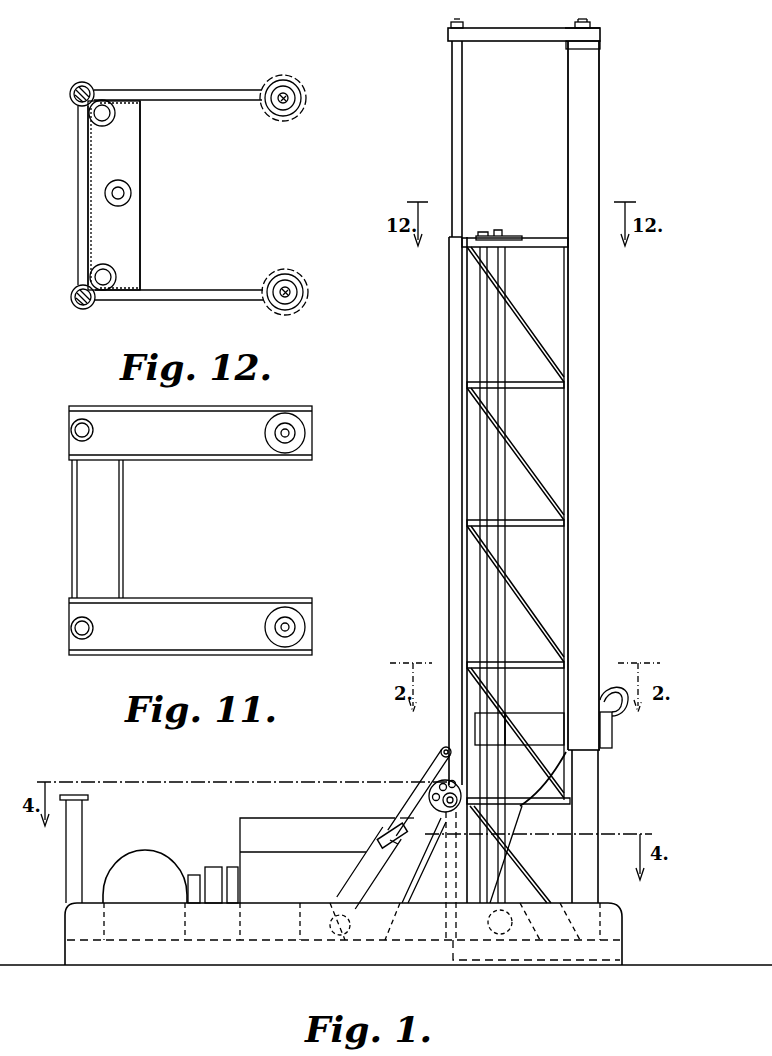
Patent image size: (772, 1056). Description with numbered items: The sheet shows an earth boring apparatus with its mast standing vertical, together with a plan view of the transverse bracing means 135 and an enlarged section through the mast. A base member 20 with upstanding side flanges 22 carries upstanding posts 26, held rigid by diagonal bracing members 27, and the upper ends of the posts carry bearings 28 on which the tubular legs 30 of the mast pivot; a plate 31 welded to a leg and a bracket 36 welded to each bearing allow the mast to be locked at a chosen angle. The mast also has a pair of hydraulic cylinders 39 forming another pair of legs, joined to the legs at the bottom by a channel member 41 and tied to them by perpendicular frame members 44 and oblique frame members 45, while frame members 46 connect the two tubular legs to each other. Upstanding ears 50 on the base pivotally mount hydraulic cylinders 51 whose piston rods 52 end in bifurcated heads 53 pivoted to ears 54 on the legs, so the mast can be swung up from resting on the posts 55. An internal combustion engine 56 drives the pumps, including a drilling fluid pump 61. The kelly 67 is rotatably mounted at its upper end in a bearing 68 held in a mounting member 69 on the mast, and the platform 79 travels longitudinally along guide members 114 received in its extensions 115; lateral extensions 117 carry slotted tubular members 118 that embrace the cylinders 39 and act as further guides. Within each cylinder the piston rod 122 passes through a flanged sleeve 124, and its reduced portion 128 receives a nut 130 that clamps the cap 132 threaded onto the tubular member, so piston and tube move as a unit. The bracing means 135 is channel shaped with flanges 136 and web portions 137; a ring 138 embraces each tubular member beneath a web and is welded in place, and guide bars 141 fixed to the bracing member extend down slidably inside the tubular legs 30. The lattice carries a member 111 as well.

In FIG. 1, the base member 20 is at (220, 958).
In FIG. 1, the upstanding side flanges 22 is at (182, 952).
In FIG. 1, the upstanding posts 26 is at (448, 841).
In FIG. 1, the diagonal bracing members 27 is at (418, 886).
In FIG. 1, the bearings 28 is at (430, 812).
In FIG. 12, the tubular legs 30 is at (88, 84).
In FIG. 1, the tubular legs 30 is at (449, 414).
In FIG. 1, the plate 31 is at (430, 770).
In FIG. 1, the bracket 36 is at (432, 786).
In FIG. 12, the hydraulic cylinders 39 is at (288, 76).
In FIG. 1, the hydraulic cylinders 39 is at (598, 800).
In FIG. 1, the channel member 41 is at (620, 944).
In FIG. 1, the frame members 44 is at (544, 248).
In FIG. 1, the obliquely extending frame members 45 is at (532, 330).
In FIG. 12, the frame members 46 is at (78, 204).
In FIG. 1, the upstanding ears 50 is at (330, 934).
In FIG. 1, the hydraulic cylinders 51 is at (344, 896).
In FIG. 1, the piston rods 52 is at (418, 796).
In FIG. 1, the bifurcated heads 53 is at (441, 756).
In FIG. 1, the ears 54 is at (446, 746).
In FIG. 1, the posts 55 is at (80, 842).
In FIG. 1, the internal combustion engine 56 is at (276, 830).
In FIG. 1, the drilling fluid pump 61 is at (152, 858).
In FIG. 12, the kelly 67 is at (125, 193).
In FIG. 1, the kelly 67 is at (506, 492).
In FIG. 12, the bearing 68 is at (124, 203).
In FIG. 1, the bearing 68 is at (500, 234).
In FIG. 12, the mounting member 69 is at (132, 164).
In FIG. 1, the mounting member 69 is at (516, 240).
In FIG. 1, the platform 79 is at (547, 722).
In FIG. 1, the cable guide 111 is at (522, 802).
In FIG. 12, the guide members 114 is at (104, 108).
In FIG. 1, the guide members 114 is at (482, 492).
In FIG. 1, the extensions 115 is at (490, 713).
In FIG. 1, the lateral extensions 117 is at (606, 740).
In FIG. 12, the tubular members 118 is at (266, 116).
In FIG. 1, the tubular members 118 is at (592, 376).
In FIG. 12, the piston rod 122 is at (290, 97).
In FIG. 12, the flanged sleeve 124 is at (292, 104).
In FIG. 11, the reduced portion 128 is at (296, 432).
In FIG. 1, the reduced portion 128 is at (592, 22).
In FIG. 11, the nut 130 is at (288, 432).
In FIG. 1, the nut 130 is at (600, 32).
In FIG. 11, the cap 132 is at (298, 444).
In FIG. 11, the transverse bracing means 135 is at (164, 448).
In FIG. 1, the transverse bracing means 135 is at (506, 40).
In FIG. 11, the flanges 136 is at (285, 406).
In FIG. 11, the web portions 137 is at (192, 452).
In FIG. 1, the ring 138 is at (598, 50).
In FIG. 12, the guide bars 141 is at (72, 102).
In FIG. 11, the guide bars 141 is at (76, 436).
In FIG. 1, the guide bars 141 is at (462, 154).